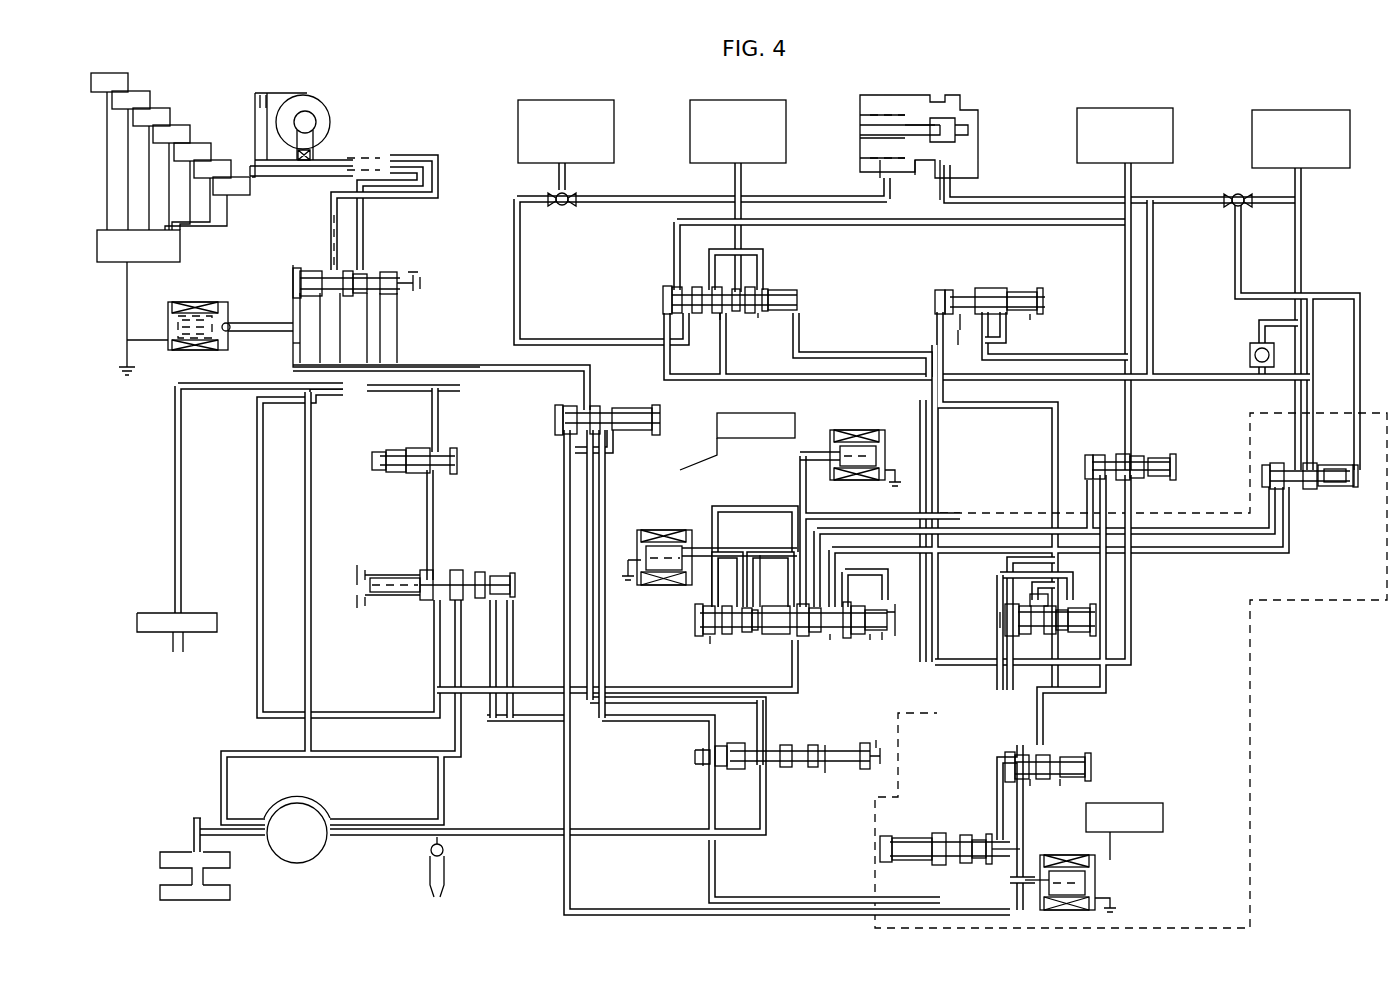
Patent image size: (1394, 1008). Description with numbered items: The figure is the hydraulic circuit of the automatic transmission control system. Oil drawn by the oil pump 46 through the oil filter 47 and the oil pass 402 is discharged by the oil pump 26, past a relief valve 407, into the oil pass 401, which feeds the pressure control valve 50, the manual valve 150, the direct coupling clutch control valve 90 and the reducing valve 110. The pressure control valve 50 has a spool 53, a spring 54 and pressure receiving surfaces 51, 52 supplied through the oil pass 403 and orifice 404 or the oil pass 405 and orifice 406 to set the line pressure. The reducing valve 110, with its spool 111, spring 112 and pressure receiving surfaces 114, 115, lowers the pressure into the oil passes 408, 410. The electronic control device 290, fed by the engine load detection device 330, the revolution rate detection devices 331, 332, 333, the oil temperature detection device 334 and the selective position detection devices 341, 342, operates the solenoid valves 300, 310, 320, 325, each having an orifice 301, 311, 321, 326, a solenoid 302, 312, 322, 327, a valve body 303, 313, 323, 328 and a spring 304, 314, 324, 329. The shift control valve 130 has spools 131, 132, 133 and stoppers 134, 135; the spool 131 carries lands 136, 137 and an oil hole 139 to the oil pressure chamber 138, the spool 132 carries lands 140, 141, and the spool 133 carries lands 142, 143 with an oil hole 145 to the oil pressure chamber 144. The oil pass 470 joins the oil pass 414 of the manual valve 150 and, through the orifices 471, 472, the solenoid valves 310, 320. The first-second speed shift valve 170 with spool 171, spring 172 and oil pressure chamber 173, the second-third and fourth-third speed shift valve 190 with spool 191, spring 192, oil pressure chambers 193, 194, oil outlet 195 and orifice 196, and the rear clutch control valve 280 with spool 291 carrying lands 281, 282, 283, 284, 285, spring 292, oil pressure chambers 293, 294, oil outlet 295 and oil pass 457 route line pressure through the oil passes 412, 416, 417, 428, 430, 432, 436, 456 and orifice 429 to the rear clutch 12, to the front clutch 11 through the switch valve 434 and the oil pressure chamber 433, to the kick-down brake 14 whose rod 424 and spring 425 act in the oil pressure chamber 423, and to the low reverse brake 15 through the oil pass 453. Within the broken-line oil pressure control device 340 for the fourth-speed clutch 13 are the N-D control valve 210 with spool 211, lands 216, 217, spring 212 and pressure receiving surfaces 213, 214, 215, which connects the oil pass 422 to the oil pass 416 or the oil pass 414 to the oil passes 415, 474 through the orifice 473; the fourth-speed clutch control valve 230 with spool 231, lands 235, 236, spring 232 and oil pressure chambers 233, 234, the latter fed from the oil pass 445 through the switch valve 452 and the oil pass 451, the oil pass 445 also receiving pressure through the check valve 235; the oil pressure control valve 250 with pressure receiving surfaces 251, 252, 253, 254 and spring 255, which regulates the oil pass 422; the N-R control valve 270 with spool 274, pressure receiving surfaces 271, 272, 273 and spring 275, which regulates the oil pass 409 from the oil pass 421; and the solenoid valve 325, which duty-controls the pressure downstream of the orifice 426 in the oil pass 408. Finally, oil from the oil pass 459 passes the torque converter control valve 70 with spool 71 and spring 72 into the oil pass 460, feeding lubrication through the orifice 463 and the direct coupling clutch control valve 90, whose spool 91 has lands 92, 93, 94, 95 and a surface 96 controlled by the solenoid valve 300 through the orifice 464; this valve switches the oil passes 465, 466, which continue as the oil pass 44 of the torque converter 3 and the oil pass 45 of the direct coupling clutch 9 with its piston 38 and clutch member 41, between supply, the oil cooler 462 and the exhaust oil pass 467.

The torque converter 3 is at (316, 106).
The direct coupling clutch 9 is at (256, 102).
The front clutch 11 is at (570, 100).
The rear clutch 12 is at (742, 100).
The 4th speed clutch 13 is at (1307, 110).
The kick-down brake 14 is at (954, 102).
The low reverse brake 15 is at (1132, 108).
The oil pump 26 is at (306, 862).
The piston 38 is at (267, 118).
The converter wall 41 is at (267, 140).
The oil pass 44 is at (350, 158).
The oil pass 45 is at (290, 178).
The oil pump 46 is at (230, 893).
The oil filter 47 is at (230, 866).
The pressure control valve 50 is at (426, 577).
The pressure receiving surface 51 is at (505, 574).
The pressure receiving surface 52 is at (480, 574).
The spool 53 is at (456, 574).
The spring 54 is at (385, 600).
The torque converter control valve 70 is at (420, 456).
The spool 71 is at (445, 473).
The spring 72 is at (388, 472).
The direct coupling clutch control valve 90 is at (371, 291).
The spool 91 is at (362, 273).
The land 92 is at (310, 270).
The land 93 is at (345, 270).
The land 94 is at (388, 272).
The land 95 is at (406, 272).
The surface 96 is at (292, 283).
The reducing valve 110 is at (606, 413).
The spool 111 is at (616, 408).
The spring 112 is at (642, 408).
The pressure receiving surface 114 is at (574, 405).
The pressure receiving surface 115 is at (595, 406).
The shift control valve 130 is at (792, 621).
The spool 131 is at (742, 630).
The spool 132 is at (770, 628).
The spool 133 is at (873, 640).
The stopper 134 is at (754, 630).
The stopper 135 is at (832, 636).
The land 136 is at (708, 606).
The land 137 is at (727, 606).
The oil pressure chamber 138 is at (701, 620).
The oil hole 139 is at (710, 638).
The land 140 is at (778, 608).
The land 141 is at (802, 607).
The land 142 is at (848, 606).
The land 143 is at (880, 638).
The oil pressure chamber 144 is at (880, 622).
The oil hole 145 is at (872, 608).
The manual valve 150 is at (839, 727).
The 1st-2nd speed shift valve 170 is at (1138, 469).
The spool 171 is at (1128, 458).
The spring 172 is at (1174, 436).
The oil pressure chamber 173 is at (1088, 458).
The 2nd-3rd speed and 4th-3rd speed shift valve 190 is at (995, 302).
The spool 191 is at (987, 289).
The spring 192 is at (1030, 316).
The oil pressure chamber 193 is at (935, 290).
The oil pressure chamber 194 is at (1037, 302).
The oil outlet 195 is at (968, 322).
The orifice 196 is at (972, 346).
The N-D control valve 210 is at (1068, 622).
The spool 211 is at (1040, 598).
The spring 212 is at (1078, 638).
The pressure receiving surface 213 is at (1000, 630).
The pressure receiving surface 214 is at (1054, 636).
The pressure receiving surface 215 is at (1062, 652).
The land 216 is at (1005, 620).
The land 217 is at (1058, 604).
The 4th speed clutch control valve 230 is at (1319, 472).
The spool 231 is at (1334, 464).
The spring 232 is at (1323, 452).
The oil pressure chamber 233 is at (1266, 462).
The oil pressure chamber 234 is at (1356, 470).
The land 235 is at (1270, 352).
The land 236 is at (1308, 484).
The oil pressure control valve 250 is at (1025, 764).
The pressure receiving surface 251 is at (996, 746).
The pressure receiving surface 252 is at (1029, 786).
The pressure receiving surface 253 is at (1044, 775).
The port 254 is at (1061, 786).
The spring 255 is at (1073, 750).
The N-R control valve 270 is at (954, 837).
The pressure receiving surface 271 is at (1000, 847).
The pressure receiving surface 272 is at (958, 865).
The pressure receiving surface 273 is at (920, 860).
The spool 274 is at (960, 836).
The spring 275 is at (904, 866).
The rear clutch control valve 280 is at (731, 301).
The land 281 is at (672, 287).
The land 282 is at (697, 314).
The land 283 is at (736, 312).
The land 284 is at (764, 318).
The land 285 is at (760, 289).
The electronic control device 290 is at (180, 250).
The spool 291 is at (722, 286).
The spring 292 is at (767, 306).
The oil pressure chamber 293 is at (663, 310).
The oil pressure chamber 294 is at (797, 298).
The oil outlet 295 is at (740, 321).
The solenoid valve 300 is at (208, 295).
The orifice 301 is at (230, 330).
The solenoid 302 is at (188, 351).
The valve body 303 is at (206, 351).
The spring 304 is at (172, 340).
The solenoid valve 310 is at (850, 452).
The orifice 311 is at (826, 453).
The solenoid 312 is at (847, 479).
The valve body 313 is at (838, 465).
The spring 314 is at (854, 424).
The solenoid valve 320 is at (709, 546).
The orifice 321 is at (697, 554).
The solenoid 322 is at (664, 578).
The valve body 323 is at (682, 550).
The spring 324 is at (640, 578).
The solenoid valve 325 is at (1063, 870).
The orifice 326 is at (1030, 875).
The solenoid 327 is at (1074, 904).
The valve body 328 is at (1056, 843).
The spring 329 is at (1080, 866).
The engine load detection device 330 is at (109, 151).
The revolution rate detection device 331 is at (131, 160).
The revolution rate detection device 332 is at (151, 169).
The revolution rate detection device 333 is at (171, 177).
The oil temperature detection device 334 is at (192, 186).
The oil pressure control device 340 is at (1250, 730).
The selective position detection device 341 is at (201, 195).
The selective position detection device 342 is at (207, 203).
The oil pass 401 is at (260, 427).
The oil pass 402 is at (197, 818).
The oil pass 403 is at (645, 688).
The orifice 404 is at (509, 630).
The oil pass 405 is at (562, 343).
The orifice 406 is at (494, 646).
The relief valve 407 is at (446, 852).
The oil pass 408 is at (595, 457).
The oil pass 409 is at (984, 754).
The oil pass 410 is at (540, 365).
The oil pass 412 is at (862, 533).
The oil pass 414 is at (780, 708).
The oil pass 415 is at (1001, 599).
The oil pass 416 is at (1050, 463).
The oil pass 417 is at (744, 186).
The oil pass 421 is at (710, 864).
The oil pass 422 is at (830, 346).
The oil pressure chamber 423 is at (943, 182).
The rod 424 is at (872, 137).
The spring 425 is at (880, 178).
The orifice 426 is at (992, 900).
The oil pass 428 is at (1135, 335).
The orifice 429 is at (992, 334).
The oil pass 430 is at (955, 391).
The oil pass 432 is at (1000, 198).
The oil pressure chamber 433 is at (917, 176).
The switch valve 434 is at (560, 204).
The oil pass 436 is at (798, 374).
The oil pass 445 is at (1306, 232).
The oil pass 451 is at (1357, 398).
The switch valve 452 is at (1243, 188).
The oil pass 453 is at (1128, 240).
The oil pass 456 is at (858, 224).
The passage 457 is at (751, 246).
The oil pass 459 is at (432, 522).
The oil pass 460 is at (437, 417).
The oil cooler 462 is at (198, 613).
The orifice 463 is at (448, 386).
The orifice 464 is at (294, 342).
The oil pass 465 is at (328, 221).
The oil pass 466 is at (352, 213).
The exhaust oil pass 467 is at (340, 400).
The oil pass 470 is at (755, 506).
The orifice 471 is at (796, 527).
The orifice 472 is at (775, 552).
The orifice 473 is at (1048, 580).
The oil pass 474 is at (1000, 576).